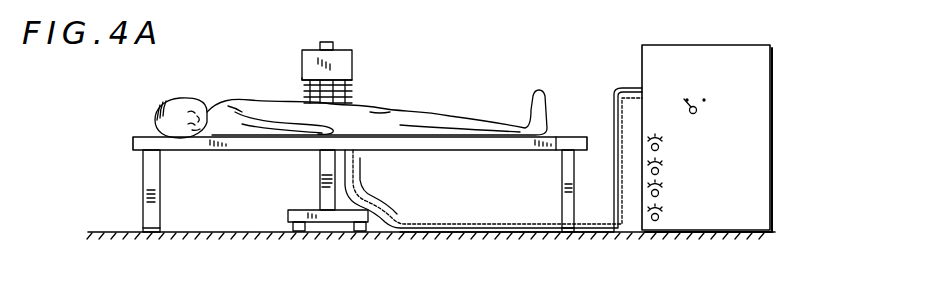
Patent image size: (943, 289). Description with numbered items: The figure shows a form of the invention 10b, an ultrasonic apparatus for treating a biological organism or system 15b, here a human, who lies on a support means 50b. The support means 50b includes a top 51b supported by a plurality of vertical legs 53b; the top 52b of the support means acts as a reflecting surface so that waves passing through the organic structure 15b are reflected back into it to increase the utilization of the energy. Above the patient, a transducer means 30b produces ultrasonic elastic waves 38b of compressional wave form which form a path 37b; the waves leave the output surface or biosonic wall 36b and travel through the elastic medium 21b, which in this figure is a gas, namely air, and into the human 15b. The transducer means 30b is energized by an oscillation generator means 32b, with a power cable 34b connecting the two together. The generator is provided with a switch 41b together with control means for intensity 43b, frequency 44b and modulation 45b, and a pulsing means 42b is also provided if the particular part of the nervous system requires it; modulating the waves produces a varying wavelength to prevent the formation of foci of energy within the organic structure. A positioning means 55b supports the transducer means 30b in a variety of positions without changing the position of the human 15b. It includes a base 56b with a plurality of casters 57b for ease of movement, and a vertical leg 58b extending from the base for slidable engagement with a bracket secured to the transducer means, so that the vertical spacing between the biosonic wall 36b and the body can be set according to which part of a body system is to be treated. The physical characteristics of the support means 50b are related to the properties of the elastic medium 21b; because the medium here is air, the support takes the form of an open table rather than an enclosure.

The form of the invention 10b is at (472, 104).
The biological organism 15b is at (234, 102).
The elastic medium 21b is at (352, 84).
The transducer means 30b is at (352, 57).
The oscillation generator means 32b is at (788, 86).
The power cable 34b is at (470, 234).
The biosonic wall 36b is at (302, 78).
The path 37b is at (296, 82).
The ultrasonic elastic waves 38b is at (352, 97).
The on-off switch 41b is at (697, 113).
The pulsing means 42b is at (651, 147).
The intensity control means 43b is at (651, 171).
The frequency control means 44b is at (651, 193).
The modulation control means 45b is at (651, 217).
The support means 50b is at (143, 200).
The top 51b is at (586, 137).
The top of the support means 52b is at (557, 137).
The vertical legs 53b is at (148, 218).
The positioning means 55b is at (320, 188).
The base 56b is at (325, 212).
The casters 57b is at (290, 232).
The vertical leg 58b is at (336, 29).